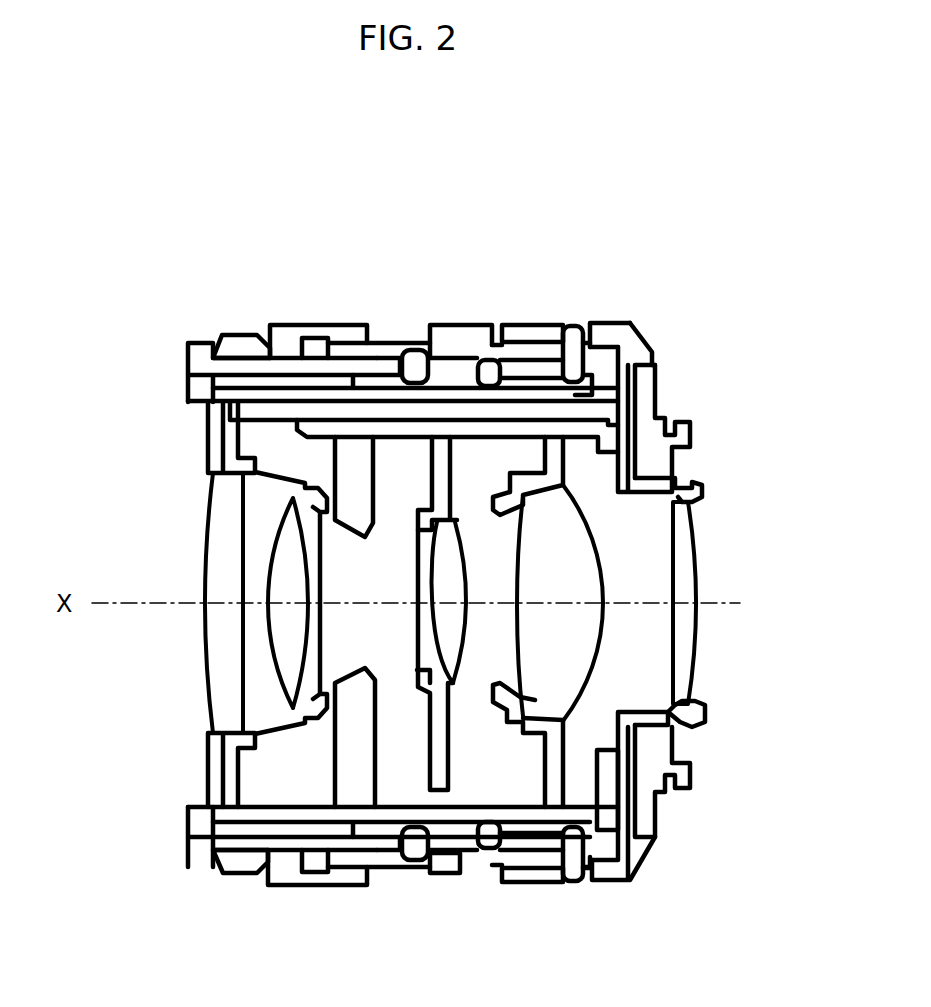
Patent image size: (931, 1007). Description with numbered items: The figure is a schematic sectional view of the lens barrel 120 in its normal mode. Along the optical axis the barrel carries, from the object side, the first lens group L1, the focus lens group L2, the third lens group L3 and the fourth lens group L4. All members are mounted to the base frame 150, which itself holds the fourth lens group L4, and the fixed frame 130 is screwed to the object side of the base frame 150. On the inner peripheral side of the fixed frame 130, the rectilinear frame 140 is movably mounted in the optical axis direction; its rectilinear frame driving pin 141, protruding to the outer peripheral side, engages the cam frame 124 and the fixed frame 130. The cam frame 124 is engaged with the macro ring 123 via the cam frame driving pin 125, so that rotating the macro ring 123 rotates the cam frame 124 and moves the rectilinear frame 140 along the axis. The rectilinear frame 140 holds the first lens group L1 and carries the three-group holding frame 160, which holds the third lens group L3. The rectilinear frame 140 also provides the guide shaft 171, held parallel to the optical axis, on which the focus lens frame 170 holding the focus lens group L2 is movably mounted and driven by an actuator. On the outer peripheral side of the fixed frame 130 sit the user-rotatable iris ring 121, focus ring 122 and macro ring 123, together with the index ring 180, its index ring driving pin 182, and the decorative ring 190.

The lens barrel 120 is at (238, 222).
The iris ring 121 is at (237, 348).
The focus ring 122 is at (283, 338).
The macro ring 123 is at (578, 347).
The cam frame 124 is at (540, 350).
The cam frame driving pin 125 is at (572, 352).
The fixed frame 130 is at (188, 350).
The rectilinear frame 140 is at (190, 388).
The rectilinear frame driving pin 141 is at (488, 340).
The base frame 150 is at (630, 346).
The three-group holding frame 160 is at (550, 785).
The focus lens frame 170 is at (440, 503).
The guide shaft 171 is at (440, 503).
The index ring 180 is at (388, 347).
The index ring driving pin 182 is at (416, 366).
The decorative ring 190 is at (477, 340).
The first lens group L1 is at (220, 667).
The focus lens group L2 is at (413, 664).
The third lens group L3 is at (503, 705).
The fourth lens group L4 is at (678, 655).